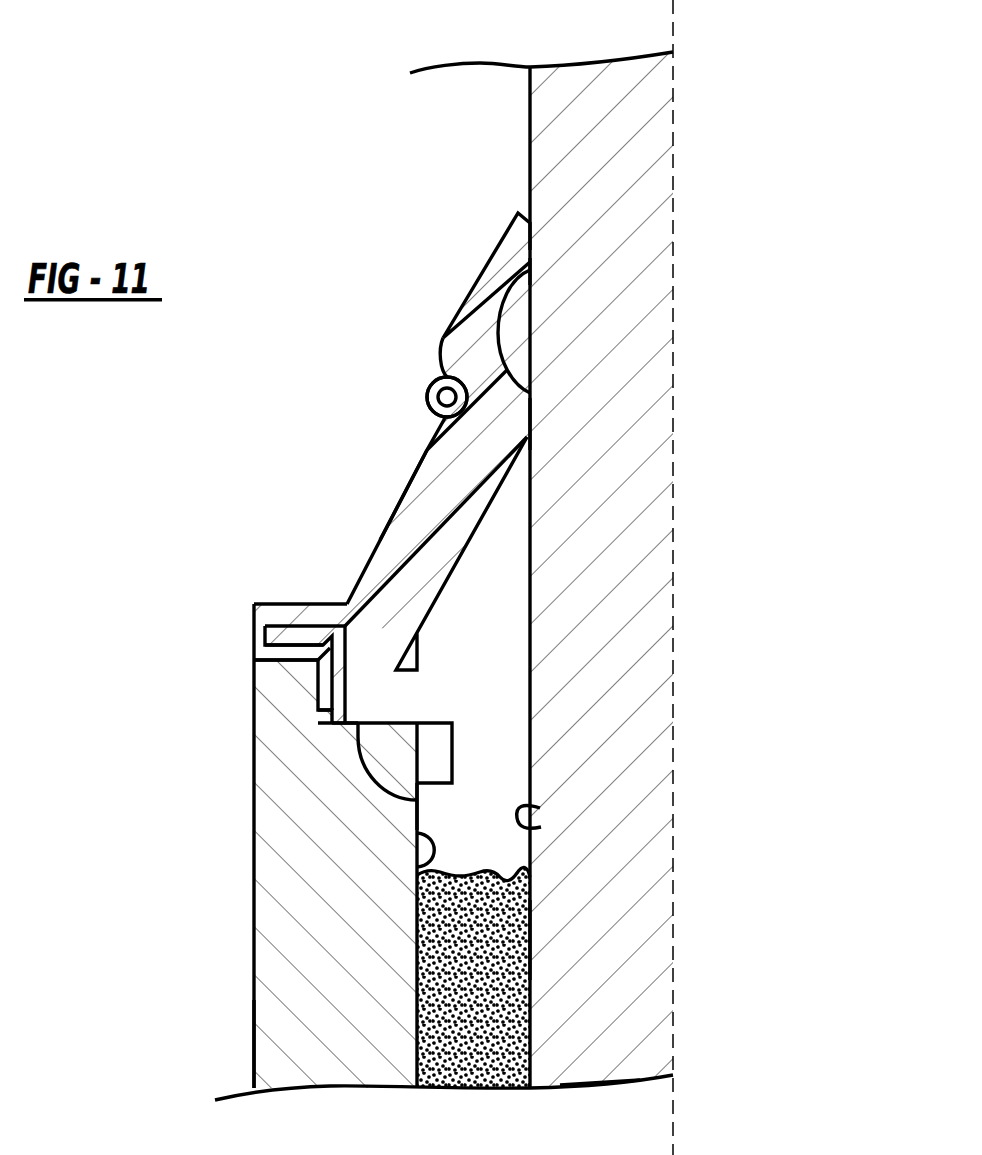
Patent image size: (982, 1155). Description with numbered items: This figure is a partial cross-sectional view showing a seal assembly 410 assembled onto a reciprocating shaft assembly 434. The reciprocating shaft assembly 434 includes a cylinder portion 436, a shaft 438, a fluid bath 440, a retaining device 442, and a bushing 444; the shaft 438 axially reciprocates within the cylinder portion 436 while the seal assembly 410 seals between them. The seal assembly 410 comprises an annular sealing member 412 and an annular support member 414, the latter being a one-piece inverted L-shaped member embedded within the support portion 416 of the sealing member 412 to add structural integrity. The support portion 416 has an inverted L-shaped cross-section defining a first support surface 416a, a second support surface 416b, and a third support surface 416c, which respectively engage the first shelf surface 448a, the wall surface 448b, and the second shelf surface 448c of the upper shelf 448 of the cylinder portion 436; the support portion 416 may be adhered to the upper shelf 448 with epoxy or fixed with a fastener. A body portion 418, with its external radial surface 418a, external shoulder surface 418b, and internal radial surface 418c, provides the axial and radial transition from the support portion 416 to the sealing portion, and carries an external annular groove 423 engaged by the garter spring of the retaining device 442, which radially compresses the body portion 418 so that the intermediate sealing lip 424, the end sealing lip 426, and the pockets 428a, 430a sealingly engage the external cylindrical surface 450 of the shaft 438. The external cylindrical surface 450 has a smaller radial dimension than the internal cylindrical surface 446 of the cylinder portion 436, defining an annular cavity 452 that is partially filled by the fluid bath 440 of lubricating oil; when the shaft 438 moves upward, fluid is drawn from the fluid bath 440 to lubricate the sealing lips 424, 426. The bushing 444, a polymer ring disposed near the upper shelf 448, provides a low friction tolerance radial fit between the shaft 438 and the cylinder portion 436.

The seal assembly 410 is at (456, 598).
The annular sealing member 412 is at (486, 420).
The annular support member 414 is at (270, 635).
The support portion 416 is at (456, 810).
The first support surface 416a is at (417, 797).
The second support surface 416b is at (315, 710).
The third support surface 416c is at (285, 662).
The body portion 418 is at (492, 420).
The external radial surface 418a is at (425, 452).
The external shoulder surface 418b is at (440, 337).
The internal radial surface 418c is at (490, 500).
The external annular groove 423 is at (432, 385).
The intermediate sealing lip 424 is at (530, 412).
The end sealing lip 426 is at (530, 238).
The pockets 428a is at (530, 433).
The pockets 430a is at (530, 268).
The reciprocating shaft assembly 434 is at (722, 662).
The cylinder portion 436 is at (290, 1050).
The shaft 438 is at (600, 945).
The fluid bath 440 is at (600, 1068).
The retaining device 442 is at (428, 398).
The bushing 444 is at (440, 755).
The internal cylindrical surface 446 is at (415, 865).
The upper shelf 448 is at (308, 684).
The first shelf surface 448a is at (393, 722).
The wall surface 448b is at (330, 722).
The second shelf surface 448c is at (267, 661).
The external cylindrical surface 450 is at (530, 832).
The annular cavity 452 is at (503, 862).